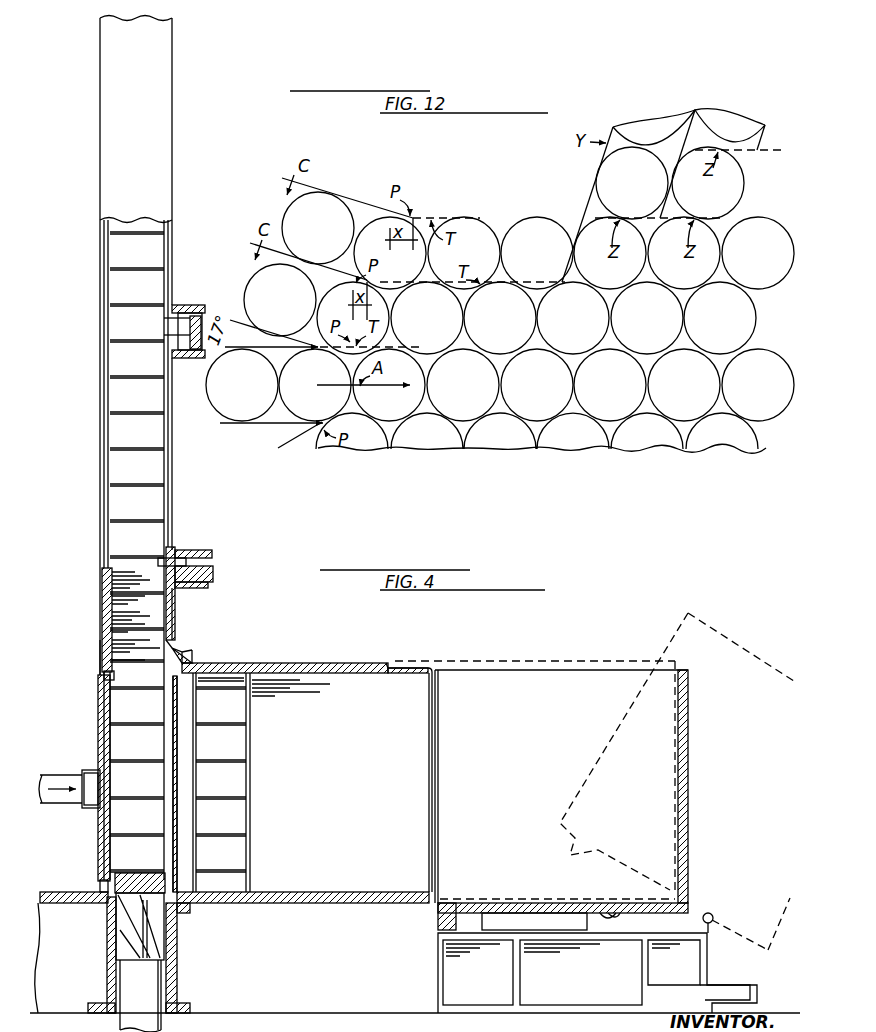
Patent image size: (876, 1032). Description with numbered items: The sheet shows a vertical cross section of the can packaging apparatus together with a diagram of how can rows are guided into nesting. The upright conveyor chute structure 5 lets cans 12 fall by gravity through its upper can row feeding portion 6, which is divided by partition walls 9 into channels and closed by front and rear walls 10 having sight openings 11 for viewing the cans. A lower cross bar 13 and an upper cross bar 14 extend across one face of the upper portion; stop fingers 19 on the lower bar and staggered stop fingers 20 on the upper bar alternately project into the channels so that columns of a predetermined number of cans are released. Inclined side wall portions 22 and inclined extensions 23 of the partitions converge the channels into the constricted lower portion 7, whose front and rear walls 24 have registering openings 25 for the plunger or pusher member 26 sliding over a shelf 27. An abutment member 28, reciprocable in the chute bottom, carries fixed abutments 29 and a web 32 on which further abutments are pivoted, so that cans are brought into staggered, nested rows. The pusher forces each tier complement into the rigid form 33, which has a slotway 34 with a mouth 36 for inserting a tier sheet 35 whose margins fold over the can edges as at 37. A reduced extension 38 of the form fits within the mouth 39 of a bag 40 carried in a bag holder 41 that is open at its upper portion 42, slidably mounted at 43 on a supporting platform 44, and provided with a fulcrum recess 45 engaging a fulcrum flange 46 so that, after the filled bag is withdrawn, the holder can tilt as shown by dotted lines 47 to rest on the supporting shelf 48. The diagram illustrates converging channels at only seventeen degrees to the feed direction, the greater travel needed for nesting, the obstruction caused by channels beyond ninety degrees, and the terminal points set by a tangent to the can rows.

The conveyor chute structure 5 is at (176, 96).
The upper can row feeding portion 6 is at (162, 153).
The lower portion 7 is at (100, 660).
The partition walls 9 is at (110, 578).
The front and rear walls 10 is at (100, 155).
The sight openings 11 is at (104, 430).
The cans 12 is at (126, 480).
The lower cross bar 13 is at (214, 569).
The upper cross bar 14 is at (200, 320).
The stop fingers 19 is at (178, 554).
The stop fingers 20 is at (168, 318).
The inclined side wall portions 22 is at (112, 646).
The inclined extension 23 is at (110, 622).
The front and rear walls 24 is at (106, 673).
The registering openings 25 is at (108, 680).
The plunger or pusher member 26 is at (100, 834).
The shelf 27 is at (60, 892).
The abutment member 28 is at (166, 961).
The fixed abutments 29 is at (200, 888).
The web 32 is at (140, 921).
The rigid form 33 is at (330, 665).
The slotway 34 is at (180, 830).
The tier sheet 35 is at (216, 676).
The mouth 36 is at (180, 650).
The folded marginal portions 37 is at (238, 682).
The reduced extension 38 is at (420, 677).
The mouth of bag 39 is at (404, 665).
The bag 40 is at (520, 660).
The bag holder 41 is at (584, 682).
The open upper portion 42 is at (538, 676).
The slide mounting 43 is at (598, 930).
The supporting platform 44 is at (440, 970).
The fulcrum recess 45 is at (616, 902).
The fulcrum flange 46 is at (712, 914).
The tilted position 47 is at (610, 745).
The supporting shelf 48 is at (738, 985).